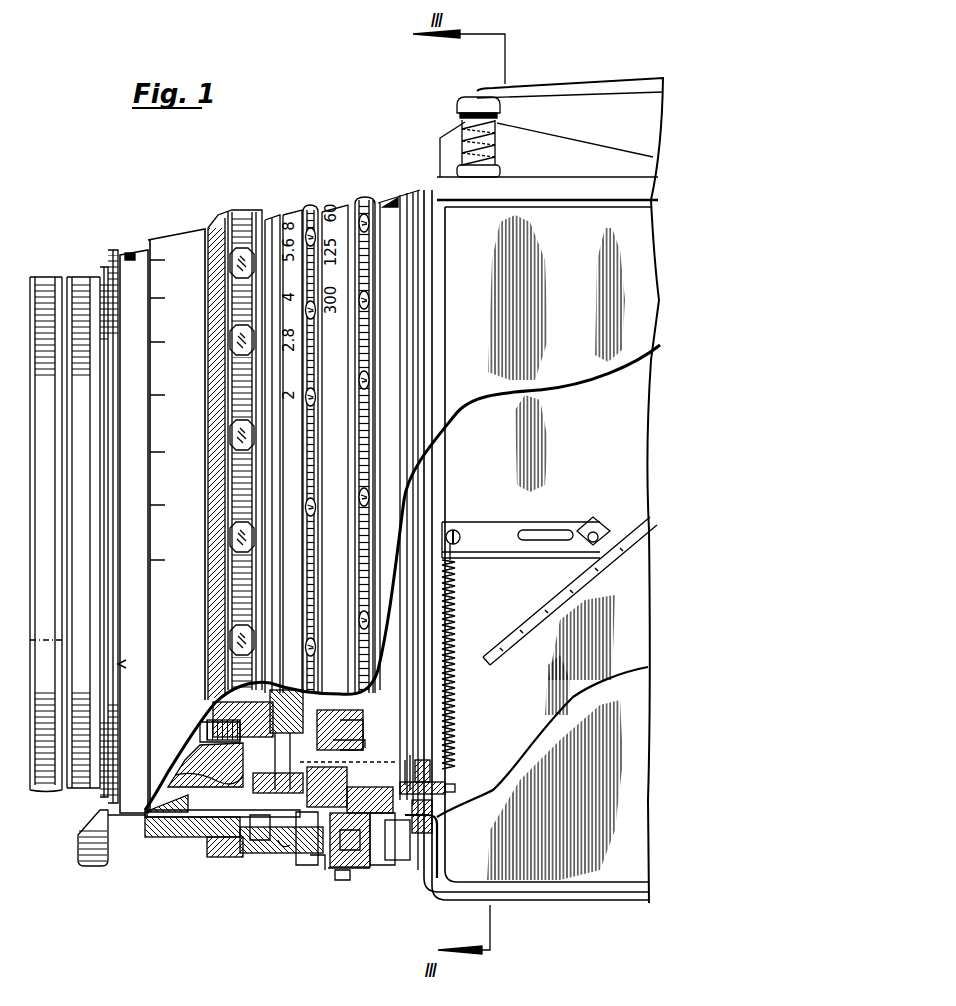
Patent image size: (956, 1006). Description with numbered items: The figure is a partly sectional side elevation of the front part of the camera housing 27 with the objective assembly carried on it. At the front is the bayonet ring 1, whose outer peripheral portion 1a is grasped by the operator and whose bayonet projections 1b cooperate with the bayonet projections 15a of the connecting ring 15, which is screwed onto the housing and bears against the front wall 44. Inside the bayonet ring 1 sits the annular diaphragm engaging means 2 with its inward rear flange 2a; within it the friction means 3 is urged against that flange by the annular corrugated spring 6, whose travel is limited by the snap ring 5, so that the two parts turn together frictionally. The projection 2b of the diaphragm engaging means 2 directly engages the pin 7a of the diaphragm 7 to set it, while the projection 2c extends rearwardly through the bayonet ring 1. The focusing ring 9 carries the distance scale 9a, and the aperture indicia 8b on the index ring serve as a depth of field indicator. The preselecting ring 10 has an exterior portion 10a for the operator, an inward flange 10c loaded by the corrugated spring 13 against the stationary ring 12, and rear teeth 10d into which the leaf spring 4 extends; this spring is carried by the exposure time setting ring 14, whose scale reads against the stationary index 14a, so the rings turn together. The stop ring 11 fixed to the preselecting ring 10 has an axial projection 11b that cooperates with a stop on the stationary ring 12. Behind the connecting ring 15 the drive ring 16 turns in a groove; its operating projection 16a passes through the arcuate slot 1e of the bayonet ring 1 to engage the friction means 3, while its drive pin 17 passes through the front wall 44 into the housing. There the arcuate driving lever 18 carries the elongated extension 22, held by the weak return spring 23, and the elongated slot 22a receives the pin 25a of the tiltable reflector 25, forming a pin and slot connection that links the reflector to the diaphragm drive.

The bayonet ring 1 is at (218, 858).
The outer peripheral portion 1a is at (242, 212).
The bayonet projections 1b is at (325, 715).
The arcuate slot 1e is at (343, 722).
The diaphragm engaging means 2 is at (268, 855).
The inwardly directed annular flange 2a is at (330, 790).
The projection 2b is at (218, 712).
The projection 2c is at (258, 842).
The friction means 3 is at (272, 790).
The leaf spring 4 is at (380, 865).
The snap ring 5 is at (190, 786).
The annular corrugated spring 6 is at (195, 762).
The diaphragm 7 is at (225, 700).
The pin 7a is at (200, 722).
The diaphragm aperture indicia 8b is at (165, 245).
The focusing ring 9 is at (130, 288).
The scale 9a is at (134, 252).
The preselecting ring 10 is at (305, 865).
The exterior portion 10a is at (309, 206).
The inwardly directed annular flange 10c is at (340, 880).
The teeth 10d is at (335, 872).
The stop ring 11 is at (283, 862).
The axial projection 11b is at (315, 872).
The stationary ring 12 is at (405, 760).
The annular corrugated spring 13 is at (322, 872).
The exposure time setting ring 14 is at (350, 875).
The stationary index 14a is at (402, 197).
The connecting ring 15 is at (395, 840).
The bayonet projections 15a is at (350, 760).
The drive ring 16 is at (430, 792).
The operating projection 16a is at (350, 742).
The drive pin 17 is at (445, 770).
The driving lever 18 is at (440, 472).
The extension 22 is at (483, 522).
The elongated slot 22a is at (540, 533).
The return spring 23 is at (457, 605).
The tiltable reflector 25 is at (650, 515).
The pin 25a is at (588, 530).
The camera housing 27 is at (455, 183).
The front wall 44 is at (432, 835).